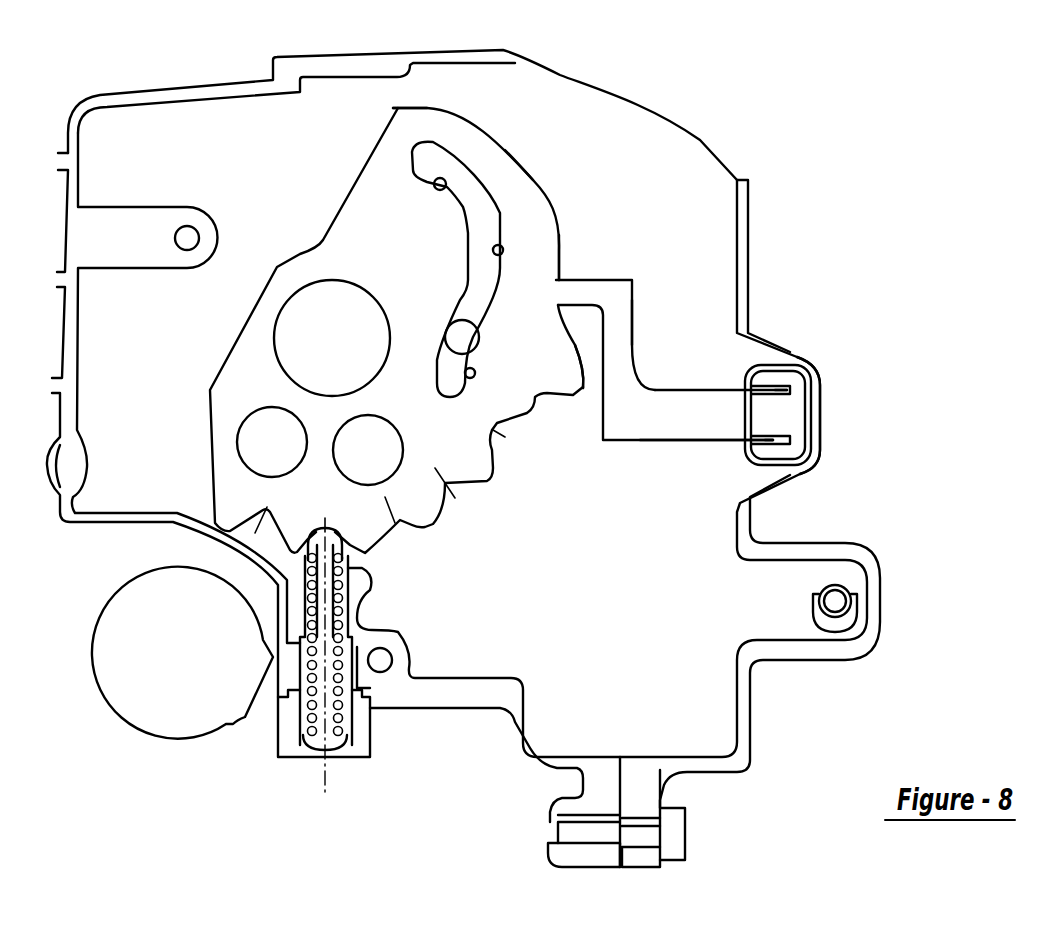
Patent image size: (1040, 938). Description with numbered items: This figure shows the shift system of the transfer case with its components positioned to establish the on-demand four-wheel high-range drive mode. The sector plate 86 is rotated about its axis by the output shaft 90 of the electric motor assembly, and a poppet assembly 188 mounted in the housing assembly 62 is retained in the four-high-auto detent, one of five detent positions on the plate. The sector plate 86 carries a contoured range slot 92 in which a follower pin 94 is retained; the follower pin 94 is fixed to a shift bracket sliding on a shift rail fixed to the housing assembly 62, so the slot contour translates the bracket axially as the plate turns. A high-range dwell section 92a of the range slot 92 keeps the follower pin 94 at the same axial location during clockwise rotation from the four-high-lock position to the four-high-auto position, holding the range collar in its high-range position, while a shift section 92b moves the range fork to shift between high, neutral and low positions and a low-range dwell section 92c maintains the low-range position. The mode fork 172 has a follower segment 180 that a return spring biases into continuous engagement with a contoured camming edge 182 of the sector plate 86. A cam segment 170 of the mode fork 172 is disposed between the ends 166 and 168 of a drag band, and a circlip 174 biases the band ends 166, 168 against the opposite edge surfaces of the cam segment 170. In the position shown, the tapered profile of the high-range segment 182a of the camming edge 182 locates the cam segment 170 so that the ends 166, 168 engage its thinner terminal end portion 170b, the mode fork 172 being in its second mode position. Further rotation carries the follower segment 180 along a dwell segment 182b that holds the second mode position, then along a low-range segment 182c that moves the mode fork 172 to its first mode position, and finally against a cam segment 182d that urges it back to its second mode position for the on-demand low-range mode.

The housing assembly 62 is at (362, 56).
The sector plate 86 is at (341, 212).
The output shaft 90 is at (348, 355).
The range slot 92 is at (467, 286).
The high-range dwell section 92a is at (476, 374).
The shift section 92b is at (504, 250).
The low-range dwell section 92c is at (440, 192).
The follower pin 94 is at (465, 337).
The drag band end 166 is at (765, 380).
The drag band end 168 is at (772, 466).
The cam segment 170 is at (687, 403).
The terminal end portion 170b is at (787, 417).
The mode fork 172 is at (631, 312).
The circlip 174 is at (810, 370).
The follower segment 180 is at (602, 290).
The camming edge 182 is at (553, 204).
The high-range segment 182a is at (603, 373).
The dwell segment 182b is at (560, 235).
The low-range segment 182c is at (523, 153).
The cam segment 182d is at (433, 107).
The poppet assembly 188 is at (343, 617).